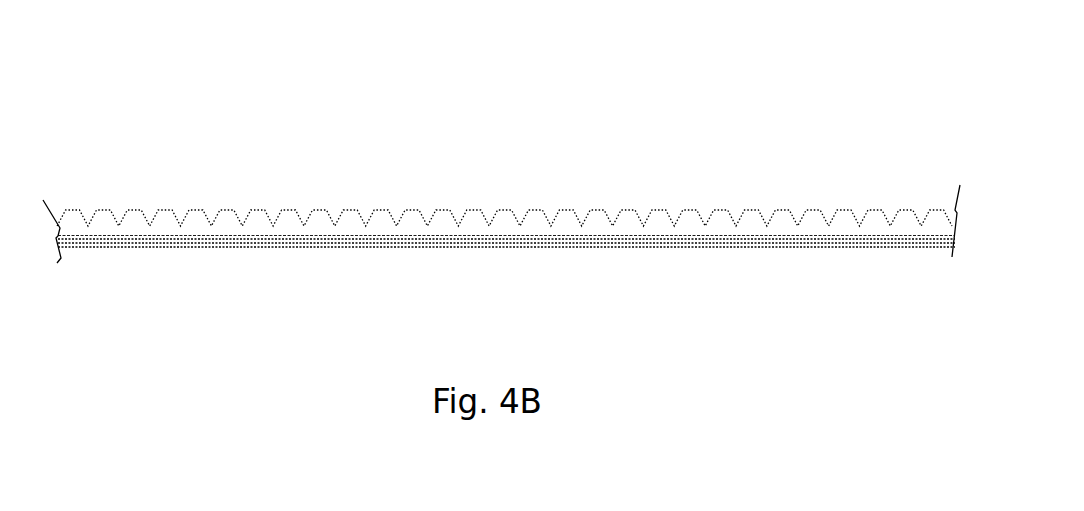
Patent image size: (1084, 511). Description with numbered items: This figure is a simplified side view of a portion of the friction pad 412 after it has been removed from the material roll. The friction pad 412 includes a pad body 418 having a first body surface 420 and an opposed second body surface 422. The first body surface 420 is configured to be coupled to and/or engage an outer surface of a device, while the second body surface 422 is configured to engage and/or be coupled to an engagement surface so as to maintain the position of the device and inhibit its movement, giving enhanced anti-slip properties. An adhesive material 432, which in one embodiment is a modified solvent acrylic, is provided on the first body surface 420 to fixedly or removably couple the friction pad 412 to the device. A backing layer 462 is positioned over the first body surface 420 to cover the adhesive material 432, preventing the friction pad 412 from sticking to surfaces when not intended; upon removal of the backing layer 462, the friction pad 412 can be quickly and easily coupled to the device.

The friction pad 412 is at (658, 131).
The pad body 418 is at (220, 213).
The first body surface 420 is at (411, 237).
The second body surface 422 is at (352, 210).
The adhesive material 432 is at (623, 246).
The backing layer 462 is at (780, 242).